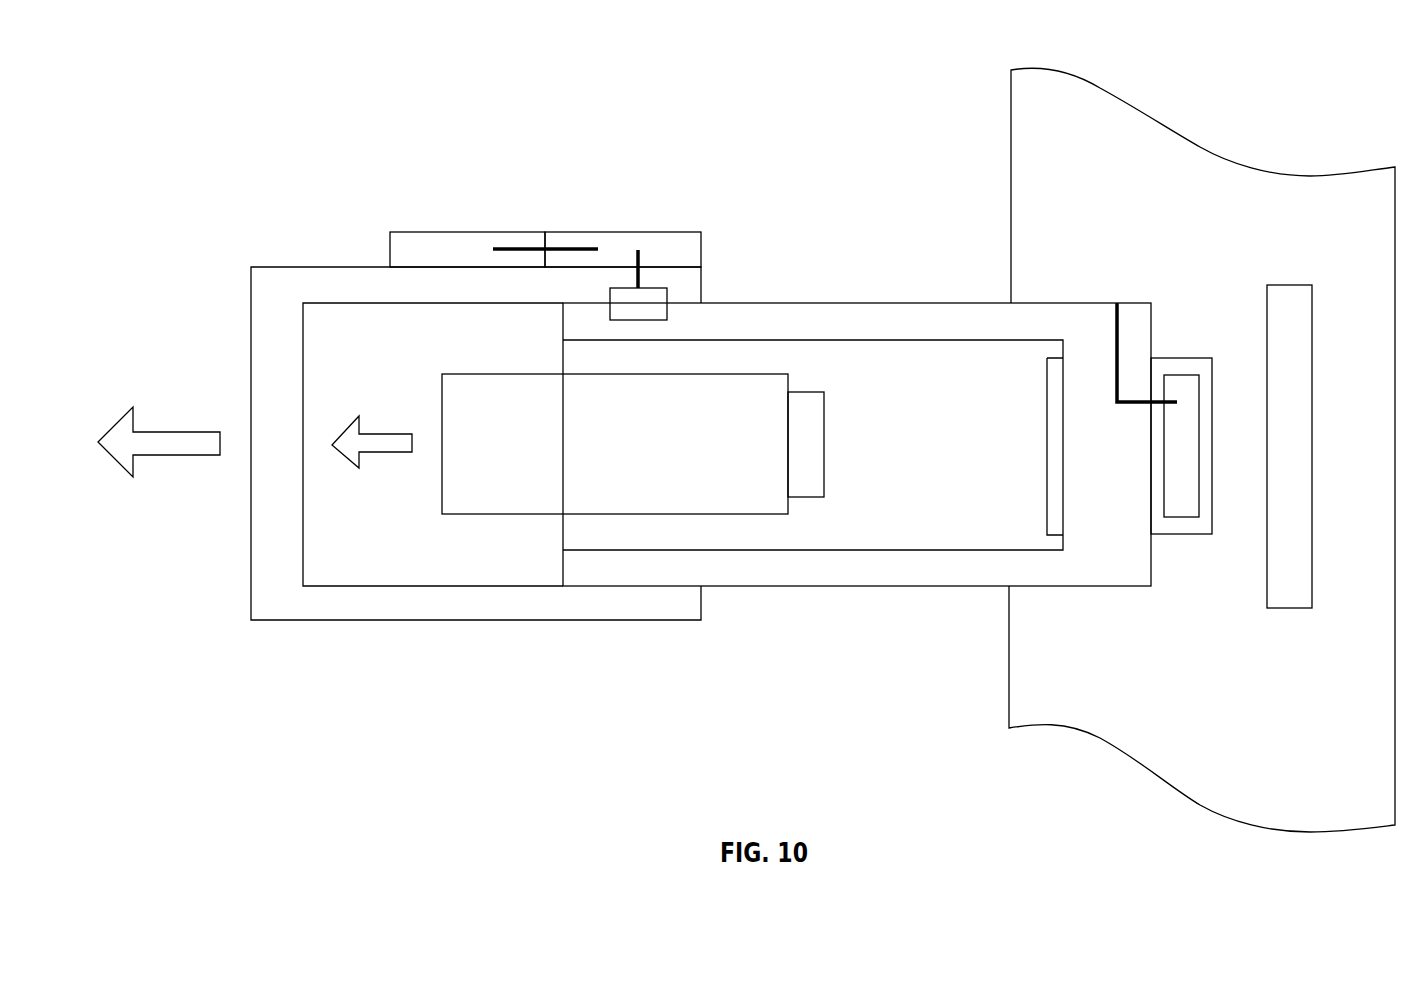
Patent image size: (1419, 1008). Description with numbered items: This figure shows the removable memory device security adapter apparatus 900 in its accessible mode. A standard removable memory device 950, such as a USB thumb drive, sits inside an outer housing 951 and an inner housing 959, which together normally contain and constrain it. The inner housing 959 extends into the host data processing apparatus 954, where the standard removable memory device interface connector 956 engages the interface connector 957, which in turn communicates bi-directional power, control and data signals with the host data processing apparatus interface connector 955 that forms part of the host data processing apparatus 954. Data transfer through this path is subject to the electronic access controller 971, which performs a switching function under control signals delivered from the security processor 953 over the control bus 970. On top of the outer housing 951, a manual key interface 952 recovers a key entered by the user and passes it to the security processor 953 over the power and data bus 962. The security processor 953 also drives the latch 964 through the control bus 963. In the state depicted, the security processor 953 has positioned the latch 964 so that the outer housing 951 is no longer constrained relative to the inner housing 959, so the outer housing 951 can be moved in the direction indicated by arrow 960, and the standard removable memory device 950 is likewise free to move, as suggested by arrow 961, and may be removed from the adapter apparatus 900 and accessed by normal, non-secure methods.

The removable memory device security adapter apparatus 900 is at (290, 138).
The standard removable memory device 950 is at (452, 373).
The outer housing 951 is at (287, 267).
The manual key interface 952 is at (425, 232).
The security processor 953 is at (617, 232).
The host data processing apparatus 954 is at (1200, 147).
The host data processing apparatus interface connector 955 is at (1282, 608).
The standard removable memory device interface connector 956 is at (825, 468).
The interface connector 957 is at (1190, 534).
The inner housing 959 is at (967, 587).
The arrow 960 is at (185, 456).
The slider direction arrow 961 is at (385, 452).
The power and data bus 962 is at (515, 248).
The control bus 963 is at (640, 255).
The latch 964 is at (690, 288).
The control bus 970 is at (1120, 338).
The electronic access controller 971 is at (1175, 517).